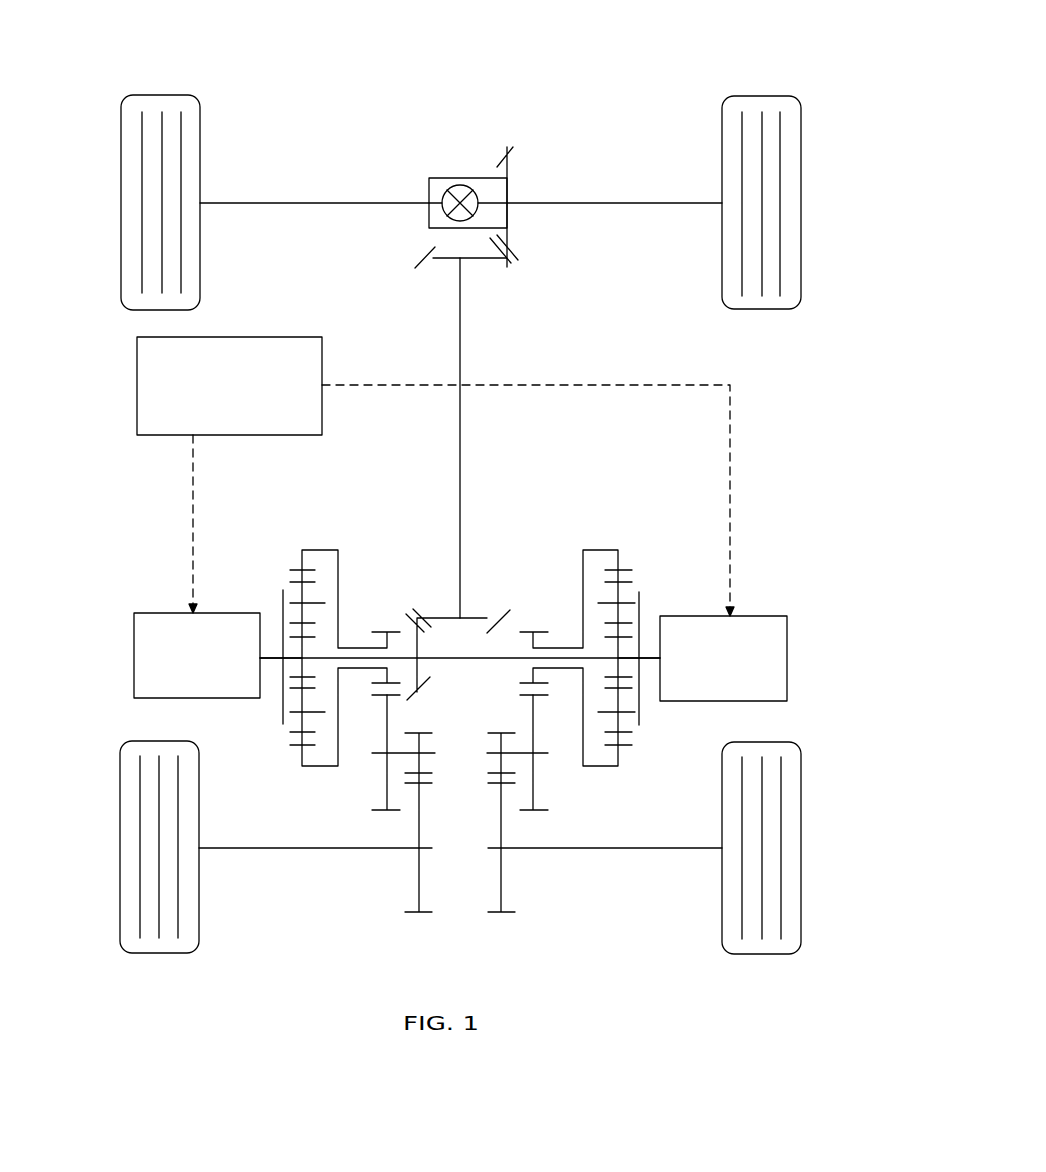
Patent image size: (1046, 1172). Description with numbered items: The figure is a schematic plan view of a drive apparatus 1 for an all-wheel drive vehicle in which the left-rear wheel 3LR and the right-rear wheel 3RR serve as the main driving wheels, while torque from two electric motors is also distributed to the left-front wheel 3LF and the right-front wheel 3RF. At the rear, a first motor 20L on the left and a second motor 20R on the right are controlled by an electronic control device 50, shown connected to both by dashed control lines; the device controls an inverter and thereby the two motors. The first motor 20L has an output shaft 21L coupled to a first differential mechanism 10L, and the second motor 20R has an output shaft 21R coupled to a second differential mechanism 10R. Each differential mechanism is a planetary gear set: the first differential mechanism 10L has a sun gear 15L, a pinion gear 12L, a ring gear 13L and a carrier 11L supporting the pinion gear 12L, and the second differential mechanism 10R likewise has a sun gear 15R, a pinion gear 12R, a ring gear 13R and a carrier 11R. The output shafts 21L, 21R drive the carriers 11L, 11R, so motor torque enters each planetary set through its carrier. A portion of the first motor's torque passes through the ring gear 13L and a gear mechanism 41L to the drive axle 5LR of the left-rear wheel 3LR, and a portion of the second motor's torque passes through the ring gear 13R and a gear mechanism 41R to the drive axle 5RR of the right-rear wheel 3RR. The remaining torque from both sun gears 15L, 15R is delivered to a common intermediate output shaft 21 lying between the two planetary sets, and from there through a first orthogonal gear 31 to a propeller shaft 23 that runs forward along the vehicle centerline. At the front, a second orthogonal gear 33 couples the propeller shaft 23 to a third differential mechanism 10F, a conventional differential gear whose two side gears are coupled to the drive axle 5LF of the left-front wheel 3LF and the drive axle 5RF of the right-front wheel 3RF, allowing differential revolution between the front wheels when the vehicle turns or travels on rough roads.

The drive apparatus 1 is at (729, 67).
The left-front wheel 3LF is at (121, 232).
The right-front wheel 3RF is at (800, 228).
The left-rear wheel 3LR is at (119, 864).
The right-rear wheel 3RR is at (800, 860).
The drive axle of the left-front wheel 5LF is at (289, 204).
The drive axle of the right-front wheel 5RF is at (613, 204).
The drive axle of the left-rear wheel 5LR is at (282, 849).
The drive axle of the right-rear wheel 5RR is at (607, 849).
The third differential mechanism 10F is at (452, 165).
The second orthogonal gear 33 is at (520, 267).
The propeller shaft 23 is at (461, 440).
The electronic control device 50 is at (292, 336).
The first motor 20L is at (175, 612).
The second motor 20R is at (746, 614).
The intermediate output shaft 21 is at (450, 660).
The first orthogonal gear 31 is at (413, 605).
The first differential mechanism 10L is at (305, 631).
The second differential mechanism 10R is at (619, 630).
The ring gear 13L is at (325, 548).
The ring gear 13R is at (596, 550).
The pinion gear 12L is at (289, 590).
The pinion gear 12R is at (626, 592).
The carrier 11L is at (279, 616).
The carrier 11R is at (640, 618).
The output shaft 21L is at (282, 640).
The output shaft 21R is at (639, 645).
The sun gear 15L is at (293, 668).
The sun gear 15R is at (630, 668).
The gear mechanism 41L is at (368, 765).
The gear mechanism 41R is at (555, 765).